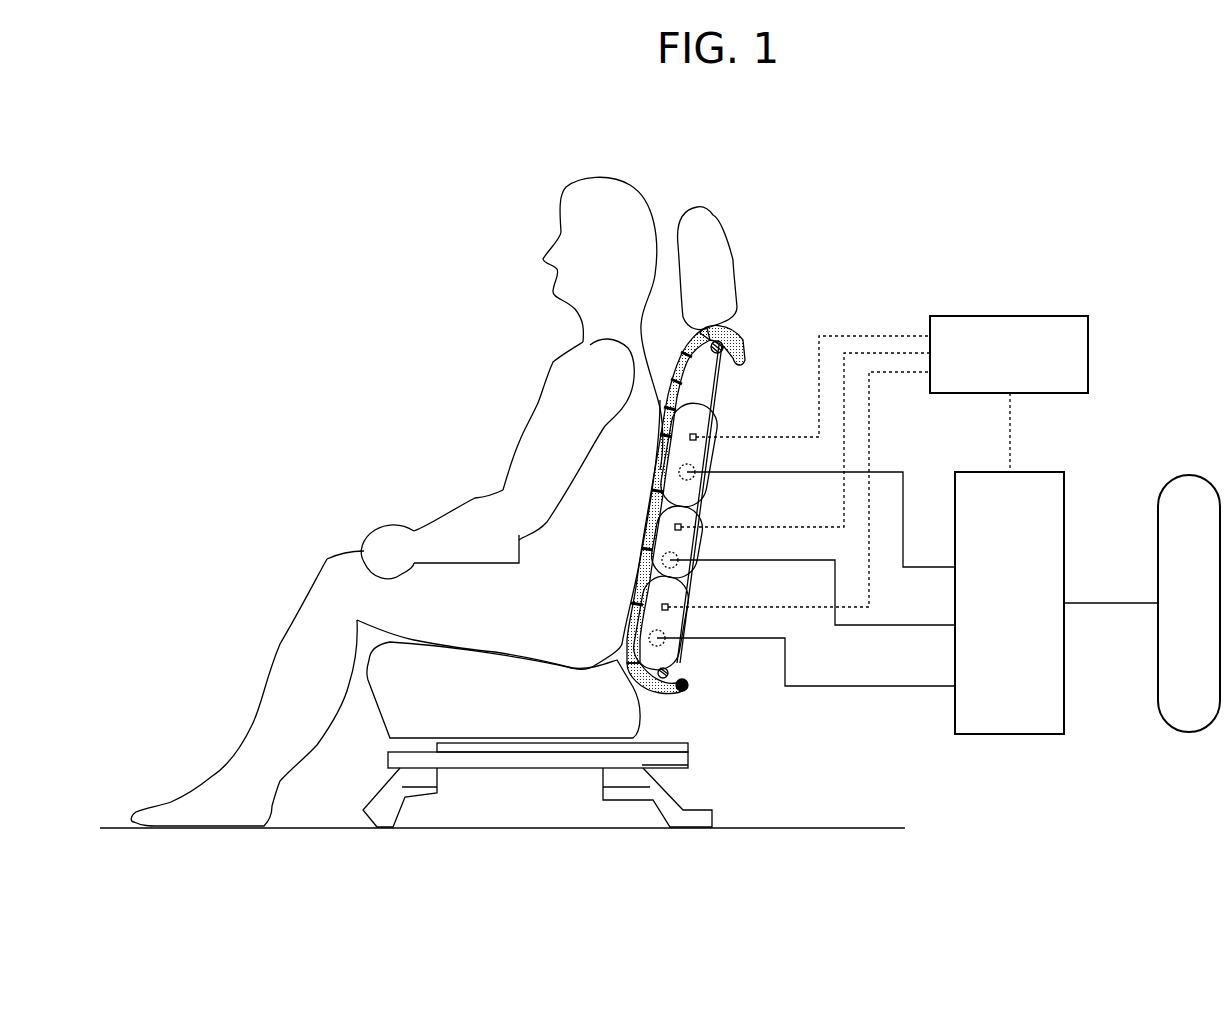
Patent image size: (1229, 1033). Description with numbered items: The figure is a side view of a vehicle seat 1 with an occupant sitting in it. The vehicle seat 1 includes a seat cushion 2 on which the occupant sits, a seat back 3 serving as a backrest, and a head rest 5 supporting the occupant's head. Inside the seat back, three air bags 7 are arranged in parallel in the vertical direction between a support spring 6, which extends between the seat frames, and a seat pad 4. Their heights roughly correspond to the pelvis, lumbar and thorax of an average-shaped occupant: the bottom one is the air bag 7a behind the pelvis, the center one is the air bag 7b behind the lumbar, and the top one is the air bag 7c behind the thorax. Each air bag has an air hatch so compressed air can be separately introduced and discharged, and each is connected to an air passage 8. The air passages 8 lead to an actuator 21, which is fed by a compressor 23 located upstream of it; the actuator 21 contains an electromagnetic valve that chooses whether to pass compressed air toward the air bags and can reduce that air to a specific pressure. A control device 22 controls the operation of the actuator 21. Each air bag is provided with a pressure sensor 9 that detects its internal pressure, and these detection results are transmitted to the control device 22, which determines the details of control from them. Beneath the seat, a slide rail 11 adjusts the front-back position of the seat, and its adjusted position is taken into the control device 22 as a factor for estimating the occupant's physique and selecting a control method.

The vehicle seat 1 is at (757, 175).
The seat cushion 2 is at (620, 713).
The seat back 3 is at (699, 690).
The seat pad 4 is at (746, 332).
The head rest 5 is at (737, 245).
The support spring 6 is at (740, 376).
The air bags 7 is at (721, 537).
The air bag behind the pelvis 7a is at (665, 652).
The air bag behind the lumbar 7b is at (685, 517).
The air bag behind the thorax 7c is at (700, 418).
The air passage 8 is at (893, 472).
The pressure sensor 9 is at (698, 440).
The slide rail 11 is at (493, 772).
The actuator 21 is at (1047, 734).
The control device 22 is at (1050, 316).
The compressor 23 is at (1190, 732).